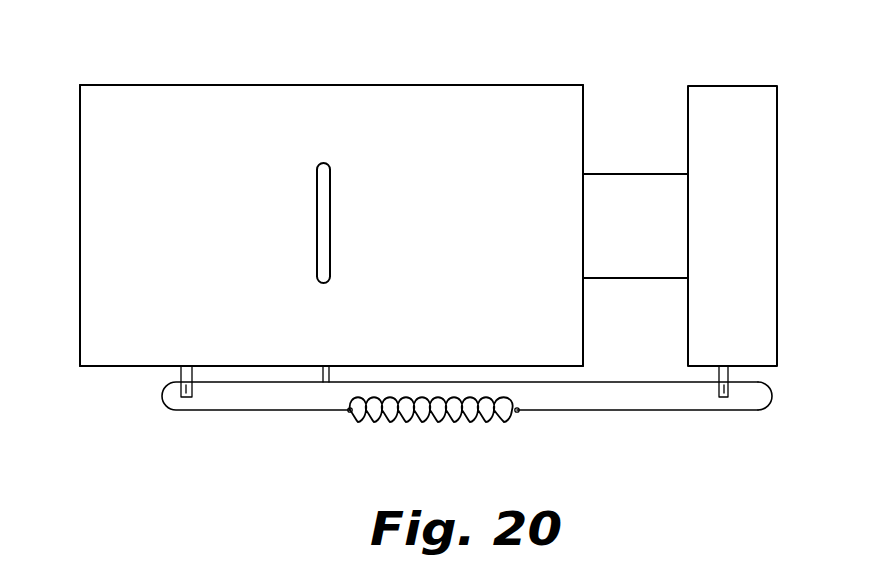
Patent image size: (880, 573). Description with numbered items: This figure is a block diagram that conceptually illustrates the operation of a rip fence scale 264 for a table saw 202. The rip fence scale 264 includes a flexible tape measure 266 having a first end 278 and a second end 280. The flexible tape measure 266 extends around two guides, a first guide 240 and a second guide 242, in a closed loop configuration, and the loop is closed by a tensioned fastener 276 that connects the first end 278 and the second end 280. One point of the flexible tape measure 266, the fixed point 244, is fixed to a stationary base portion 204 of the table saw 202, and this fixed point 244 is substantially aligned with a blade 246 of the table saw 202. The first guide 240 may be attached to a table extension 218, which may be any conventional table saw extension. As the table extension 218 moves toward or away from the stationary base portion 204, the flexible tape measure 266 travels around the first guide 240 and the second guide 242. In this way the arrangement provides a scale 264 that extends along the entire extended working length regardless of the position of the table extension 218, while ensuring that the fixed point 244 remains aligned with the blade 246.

The table saw 202 is at (218, 85).
The stationary base portion 204 is at (125, 189).
The blade 246 is at (326, 182).
The table extension 218 is at (746, 156).
The fixed point 244 is at (330, 366).
The second guide 242 is at (177, 400).
The first guide 240 is at (724, 397).
The rip fence scale 264 is at (150, 387).
The flexible tape measure 266 is at (768, 392).
The tensioned fastener 276 is at (450, 415).
The first end 278 is at (347, 413).
The second end 280 is at (519, 412).